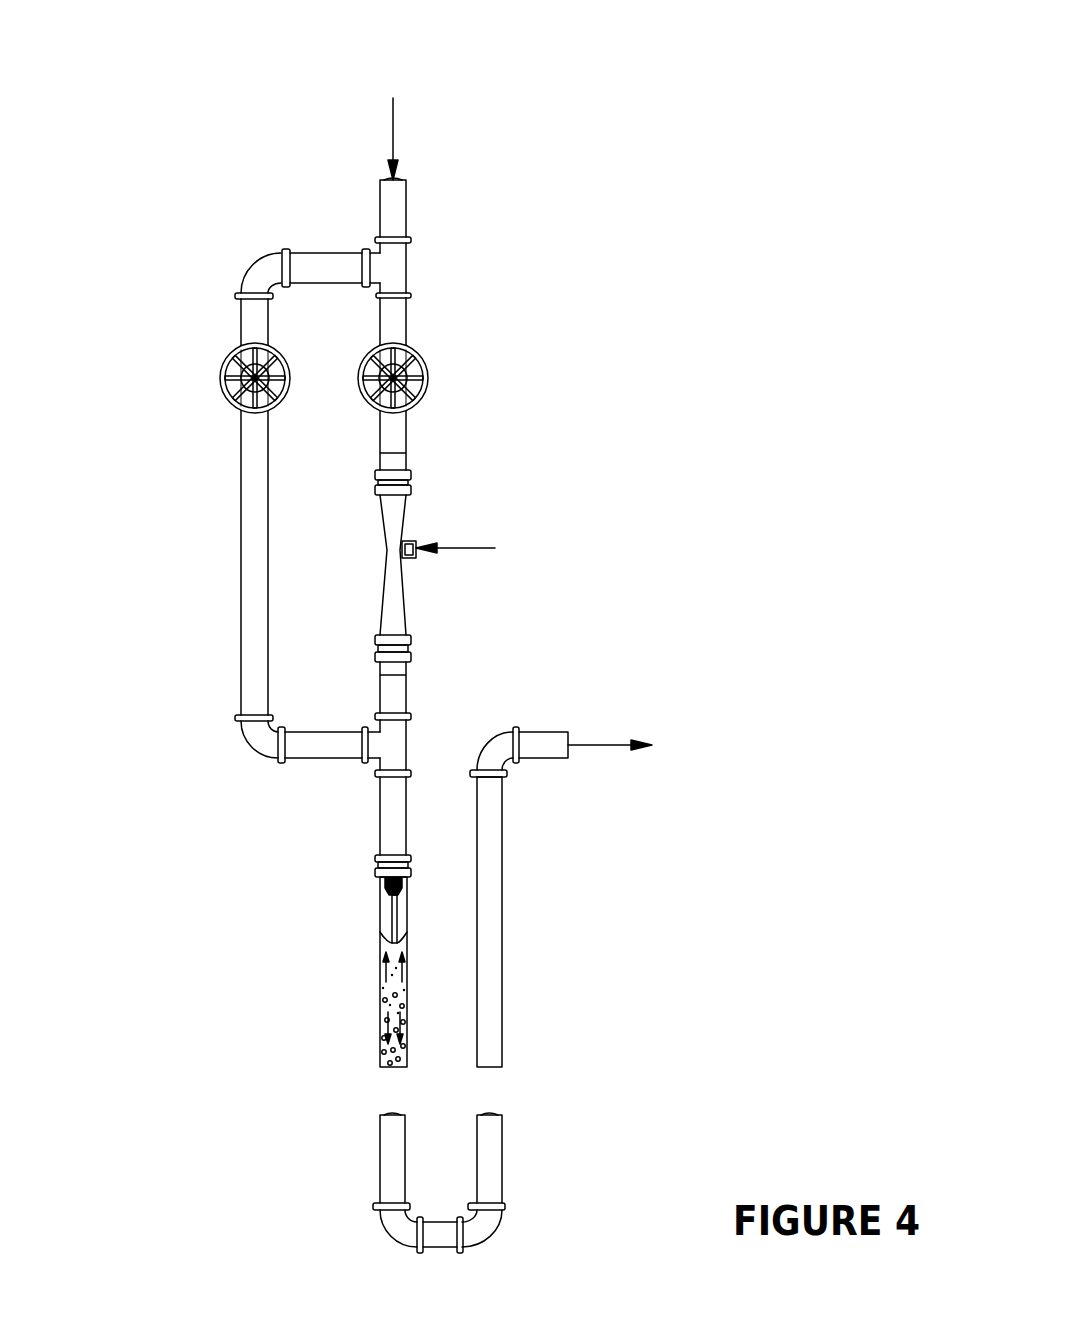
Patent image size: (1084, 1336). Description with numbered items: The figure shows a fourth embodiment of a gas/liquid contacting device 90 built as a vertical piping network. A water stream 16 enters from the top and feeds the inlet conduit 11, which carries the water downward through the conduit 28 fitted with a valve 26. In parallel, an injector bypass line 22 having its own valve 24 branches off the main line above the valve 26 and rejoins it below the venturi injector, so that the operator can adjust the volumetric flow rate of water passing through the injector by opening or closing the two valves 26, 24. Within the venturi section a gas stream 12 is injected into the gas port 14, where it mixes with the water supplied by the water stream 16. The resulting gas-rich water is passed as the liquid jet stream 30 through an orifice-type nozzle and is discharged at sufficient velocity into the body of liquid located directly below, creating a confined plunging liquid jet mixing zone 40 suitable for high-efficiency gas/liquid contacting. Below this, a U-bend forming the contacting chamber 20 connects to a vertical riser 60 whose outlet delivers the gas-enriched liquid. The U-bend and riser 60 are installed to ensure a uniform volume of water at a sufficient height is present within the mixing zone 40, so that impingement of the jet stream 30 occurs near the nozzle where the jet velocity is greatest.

The device 90 is at (460, 651).
The water stream 16 is at (395, 122).
The inlet conduit 11 is at (408, 208).
The conduit 28 is at (408, 318).
The valve 26 is at (430, 378).
The valve 24 is at (217, 373).
The injector bypass line 22 is at (242, 537).
The gas port 14 is at (408, 540).
The gas stream 12 is at (473, 548).
The liquid jet stream 30 is at (387, 908).
The CPLJ mixing zone 40 is at (382, 967).
The vertical riser 60 is at (502, 1000).
The contacting chamber 20 is at (382, 1138).